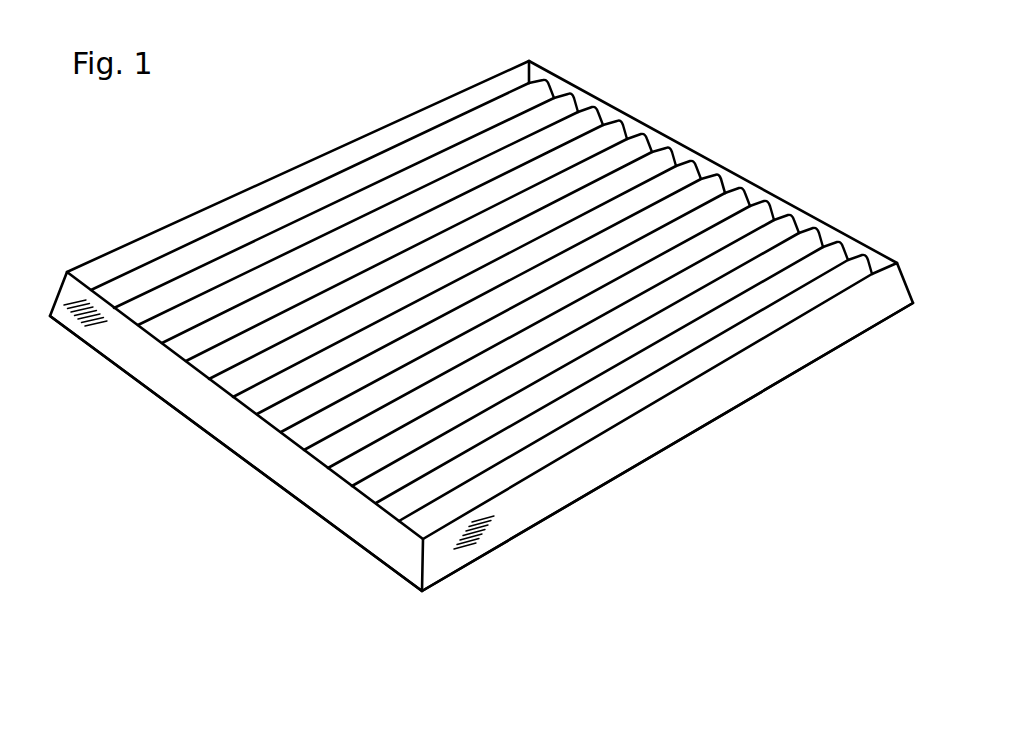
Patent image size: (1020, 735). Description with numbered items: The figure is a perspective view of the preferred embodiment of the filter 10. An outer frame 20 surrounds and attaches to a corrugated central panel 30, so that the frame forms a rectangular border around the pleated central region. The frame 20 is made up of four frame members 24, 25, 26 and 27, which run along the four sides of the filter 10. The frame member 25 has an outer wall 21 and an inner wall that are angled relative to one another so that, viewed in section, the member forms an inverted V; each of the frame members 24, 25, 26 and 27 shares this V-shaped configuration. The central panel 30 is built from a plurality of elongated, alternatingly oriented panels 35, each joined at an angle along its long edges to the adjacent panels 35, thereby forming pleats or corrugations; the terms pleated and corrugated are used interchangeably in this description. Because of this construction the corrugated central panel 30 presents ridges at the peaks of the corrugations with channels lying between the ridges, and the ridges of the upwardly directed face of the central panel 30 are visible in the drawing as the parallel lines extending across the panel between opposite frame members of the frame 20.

The filter 10 is at (807, 184).
The outer frame 20 is at (768, 373).
The outer wall 21 is at (356, 525).
The frame member 24 is at (670, 445).
The frame member 25 is at (243, 431).
The frame member 26 is at (200, 208).
The frame member 27 is at (829, 221).
The corrugated central panel 30 is at (580, 157).
The panels 35 is at (697, 195).